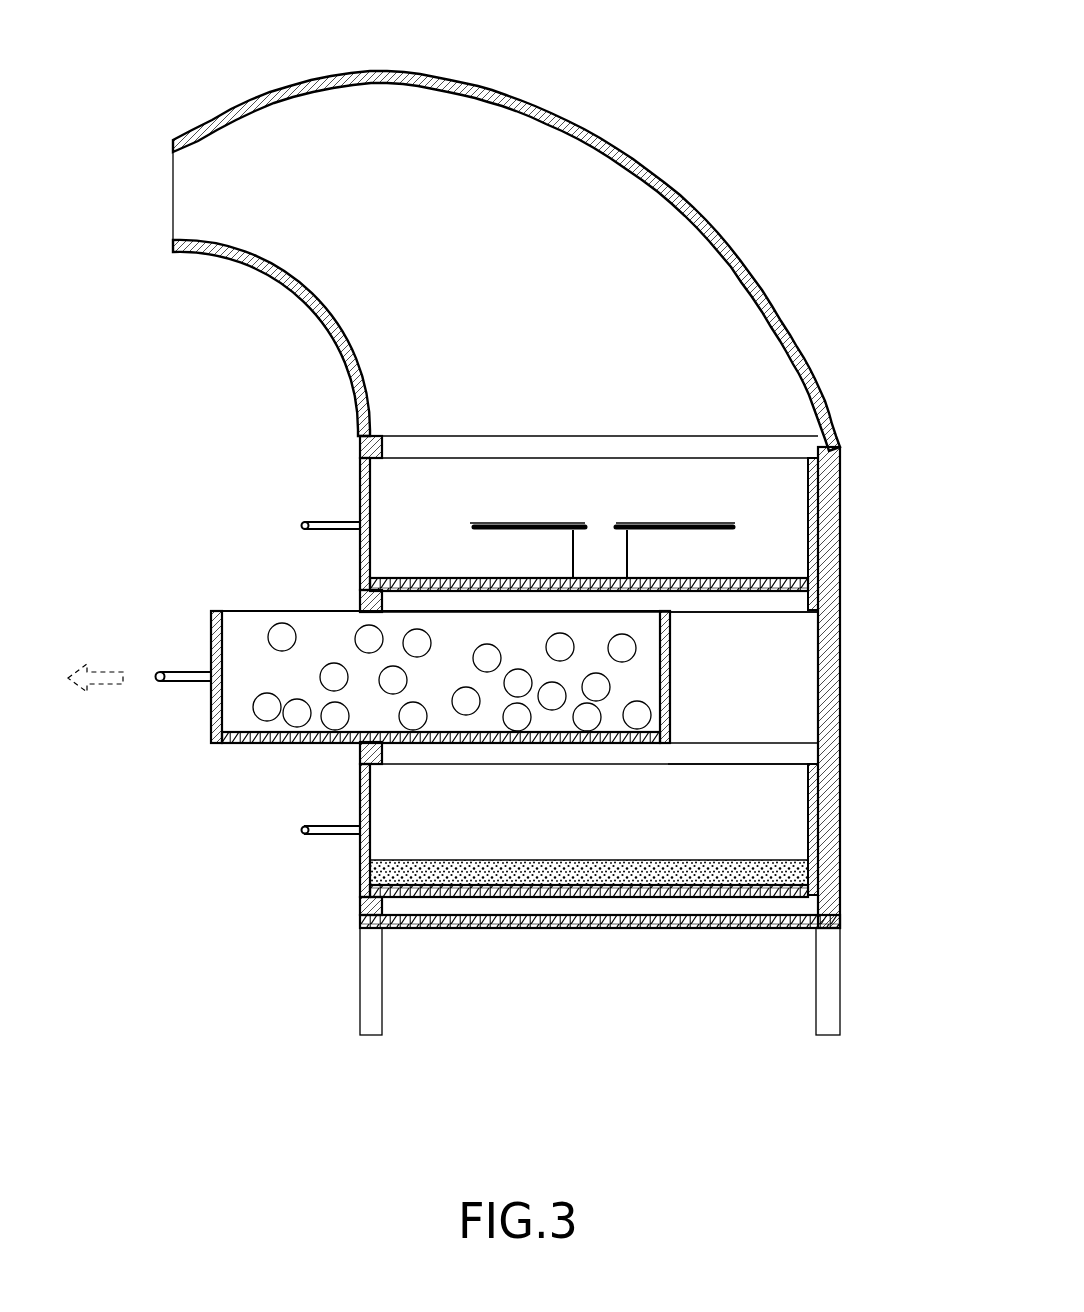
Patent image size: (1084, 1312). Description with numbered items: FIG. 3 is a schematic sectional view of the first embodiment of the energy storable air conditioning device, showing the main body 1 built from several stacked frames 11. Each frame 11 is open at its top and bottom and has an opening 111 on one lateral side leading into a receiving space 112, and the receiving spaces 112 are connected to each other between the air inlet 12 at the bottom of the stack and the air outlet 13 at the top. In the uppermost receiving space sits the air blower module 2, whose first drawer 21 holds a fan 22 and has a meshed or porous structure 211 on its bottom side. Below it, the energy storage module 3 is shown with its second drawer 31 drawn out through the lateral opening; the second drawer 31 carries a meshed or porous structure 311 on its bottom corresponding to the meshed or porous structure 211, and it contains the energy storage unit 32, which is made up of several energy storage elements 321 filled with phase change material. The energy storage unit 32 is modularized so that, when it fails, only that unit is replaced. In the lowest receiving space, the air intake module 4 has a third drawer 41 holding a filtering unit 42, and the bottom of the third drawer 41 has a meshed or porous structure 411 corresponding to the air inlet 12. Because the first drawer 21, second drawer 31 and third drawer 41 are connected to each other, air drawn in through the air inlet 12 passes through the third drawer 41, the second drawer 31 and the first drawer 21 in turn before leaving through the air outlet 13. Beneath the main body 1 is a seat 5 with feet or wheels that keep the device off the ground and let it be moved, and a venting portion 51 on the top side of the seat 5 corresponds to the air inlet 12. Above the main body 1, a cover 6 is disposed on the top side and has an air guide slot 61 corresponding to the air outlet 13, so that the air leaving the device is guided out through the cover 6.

The main body 1 is at (842, 792).
The frame 11 is at (830, 856).
The opening 111 is at (360, 606).
The receiving space 112 is at (790, 690).
The air inlet 12 is at (396, 900).
The air outlet 13 is at (373, 436).
The air blower module 2 is at (360, 468).
The first drawer 21 is at (362, 503).
The meshed or porous structure 211 is at (763, 578).
The fan 22 is at (706, 527).
The energy storage module 3 is at (205, 628).
The second drawer 31 is at (216, 650).
The meshed or porous structure 311 is at (256, 743).
The energy storage unit 32 is at (270, 624).
The energy storage element 321 is at (265, 708).
The air intake module 4 is at (355, 850).
The third drawer 41 is at (360, 782).
The meshed or porous structure 411 is at (530, 890).
The filtering unit 42 is at (368, 898).
The seat 5 is at (716, 931).
The venting portion 51 is at (630, 930).
The cover 6 is at (312, 80).
The air guide slot 61 is at (197, 188).